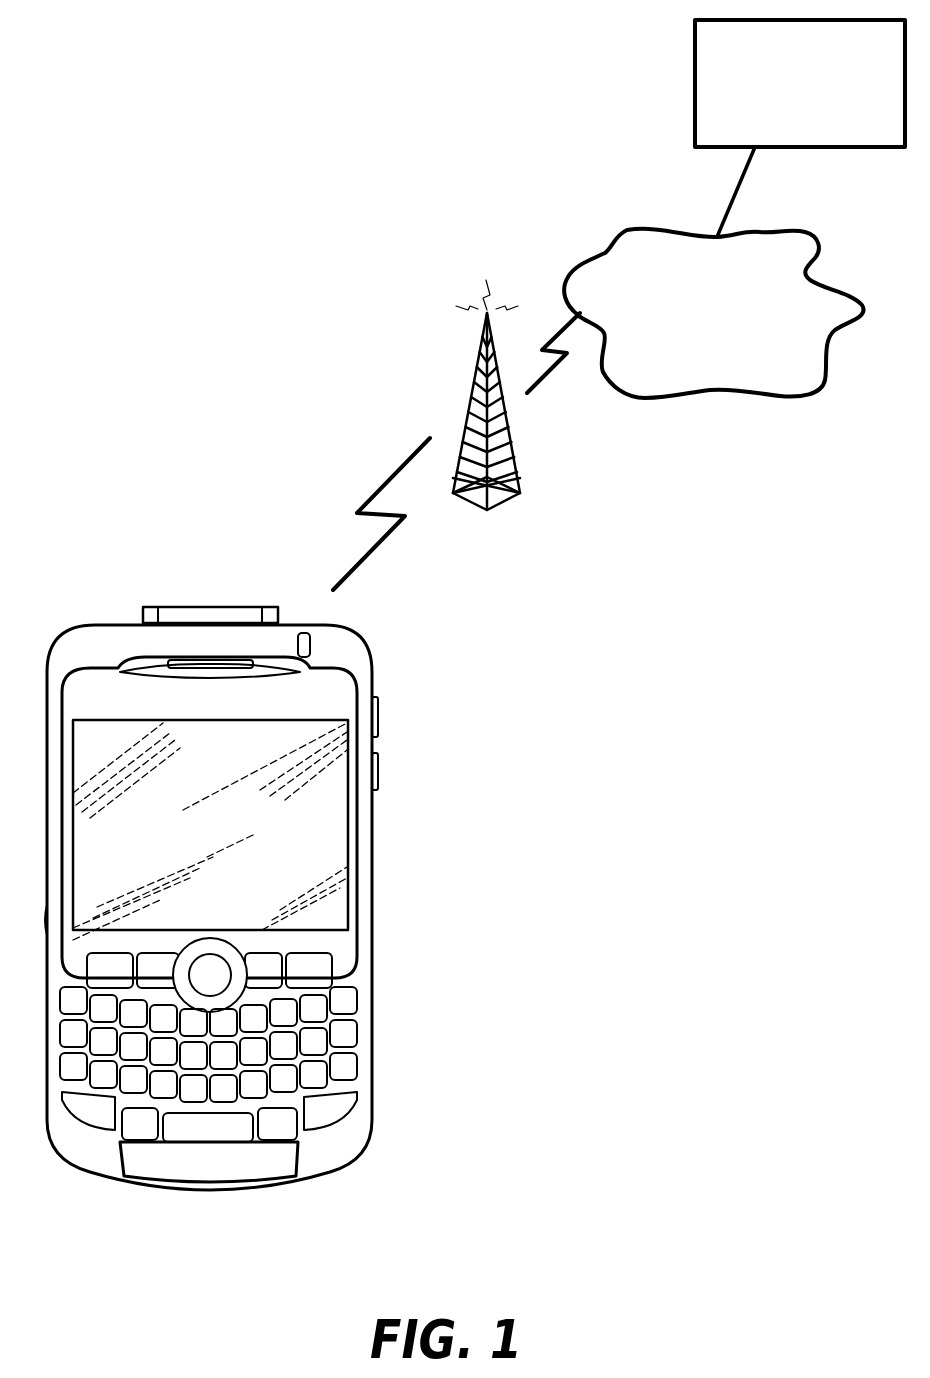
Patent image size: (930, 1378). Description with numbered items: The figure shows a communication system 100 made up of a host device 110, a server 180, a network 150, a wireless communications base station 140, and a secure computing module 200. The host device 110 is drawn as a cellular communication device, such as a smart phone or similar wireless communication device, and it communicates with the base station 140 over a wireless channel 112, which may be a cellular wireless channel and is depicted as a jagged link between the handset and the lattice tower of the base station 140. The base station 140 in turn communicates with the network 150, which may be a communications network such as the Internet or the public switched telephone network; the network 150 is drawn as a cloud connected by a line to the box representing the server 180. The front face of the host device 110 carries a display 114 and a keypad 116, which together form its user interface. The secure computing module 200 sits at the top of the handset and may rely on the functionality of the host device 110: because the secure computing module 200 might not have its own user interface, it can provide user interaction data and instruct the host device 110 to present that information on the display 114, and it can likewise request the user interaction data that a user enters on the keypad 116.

The communication system 100 is at (205, 188).
The host device 110 is at (264, 868).
The wireless channel 112 is at (383, 480).
The display 114 is at (320, 815).
The keypad 116 is at (335, 1138).
The wireless communications base station 140 is at (472, 398).
The network 150 is at (713, 313).
The server 180 is at (800, 83).
The secure computing module 200 is at (195, 603).